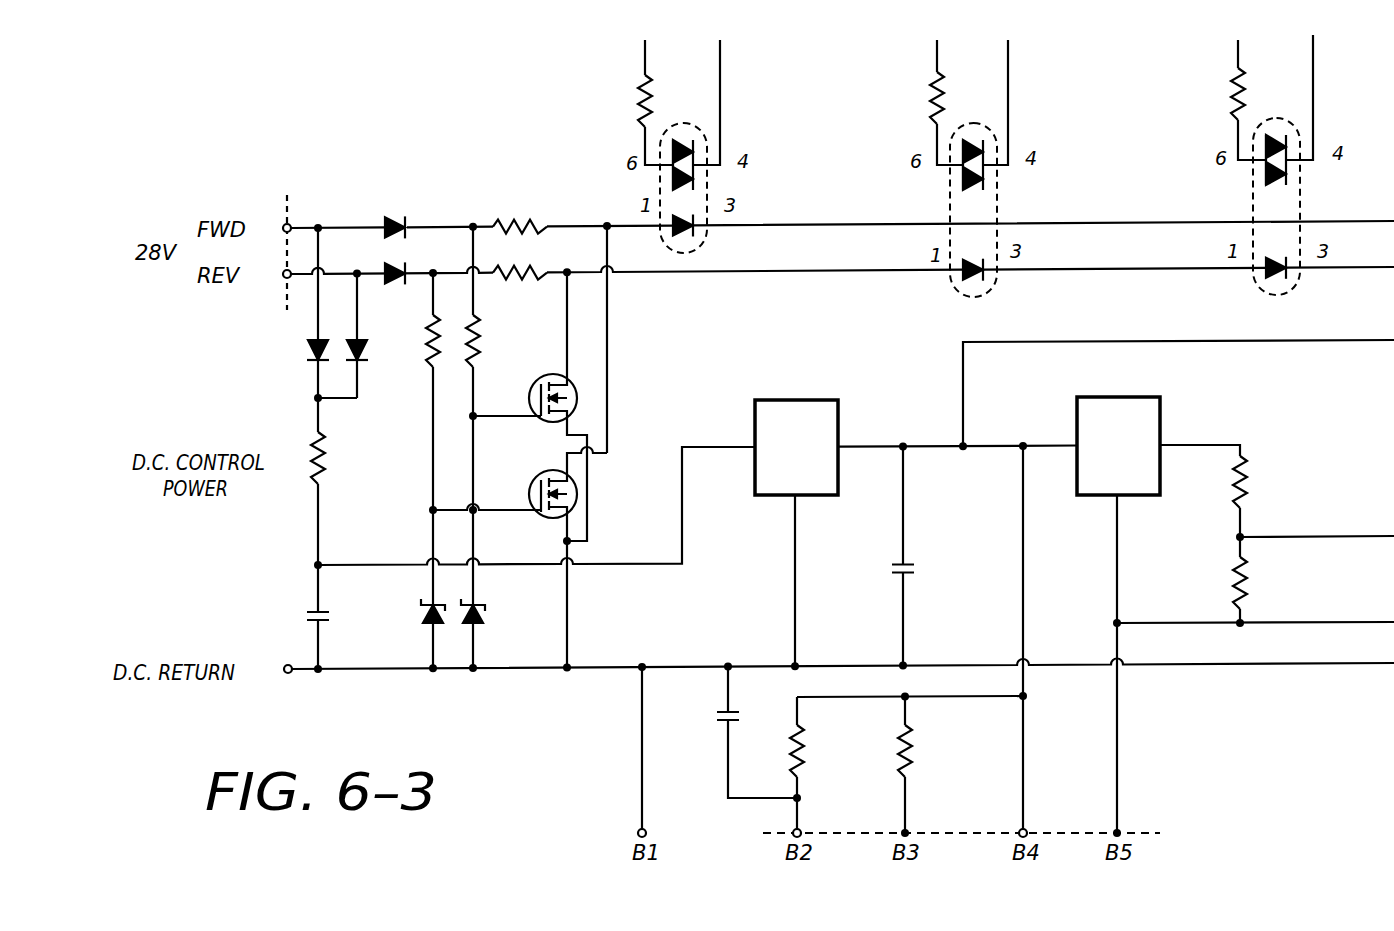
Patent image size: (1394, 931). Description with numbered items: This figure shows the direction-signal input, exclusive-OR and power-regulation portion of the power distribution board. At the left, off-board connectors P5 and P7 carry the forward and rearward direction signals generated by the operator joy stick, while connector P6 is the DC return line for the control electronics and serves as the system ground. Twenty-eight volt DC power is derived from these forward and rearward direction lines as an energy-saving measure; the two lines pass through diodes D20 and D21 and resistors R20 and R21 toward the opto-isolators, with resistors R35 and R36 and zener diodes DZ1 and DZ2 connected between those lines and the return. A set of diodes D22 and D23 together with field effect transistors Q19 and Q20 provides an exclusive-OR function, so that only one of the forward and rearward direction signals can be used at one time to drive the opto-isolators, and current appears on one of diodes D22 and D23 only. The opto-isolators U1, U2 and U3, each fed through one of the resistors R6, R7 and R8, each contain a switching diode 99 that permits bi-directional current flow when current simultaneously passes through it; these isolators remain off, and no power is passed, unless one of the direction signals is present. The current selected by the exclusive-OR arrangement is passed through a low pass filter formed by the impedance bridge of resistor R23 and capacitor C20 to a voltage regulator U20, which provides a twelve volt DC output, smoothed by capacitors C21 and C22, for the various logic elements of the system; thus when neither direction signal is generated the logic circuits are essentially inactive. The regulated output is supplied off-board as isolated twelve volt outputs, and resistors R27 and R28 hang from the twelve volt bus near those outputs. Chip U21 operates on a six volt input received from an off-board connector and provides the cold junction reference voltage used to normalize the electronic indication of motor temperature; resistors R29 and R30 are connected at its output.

The switching diode 99 is at (682, 236).
The opto-isolator U1 is at (657, 146).
The opto-isolator U2 is at (953, 168).
The opto-isolator U3 is at (1260, 165).
The resistor R6 is at (625, 101).
The resistor R7 is at (917, 98).
The resistor R8 is at (1222, 94).
The resistor R20 is at (520, 211).
The resistor R21 is at (520, 289).
The resistor R23 is at (343, 458).
The resistor R27 is at (822, 751).
The resistor R28 is at (930, 751).
The resistor R29 is at (1266, 482).
The resistor R30 is at (1215, 583).
The resistor R35 is at (414, 341).
The resistor R36 is at (498, 341).
The diode D20 is at (398, 213).
The diode D21 is at (398, 289).
The diode D22 is at (297, 361).
The diode D23 is at (380, 361).
The zener diode DZ1 is at (416, 627).
The zener diode DZ2 is at (502, 614).
The capacitor C20 is at (346, 616).
The capacitor C21 is at (883, 556).
The capacitor C22 is at (732, 732).
The field effect transistor Q19 is at (544, 411).
The field effect transistor Q20 is at (537, 490).
The voltage regulator U20 is at (807, 449).
The chip U21 is at (1118, 429).
The connector P5 is at (265, 205).
The connector P6 is at (266, 673).
The connector P7 is at (265, 304).